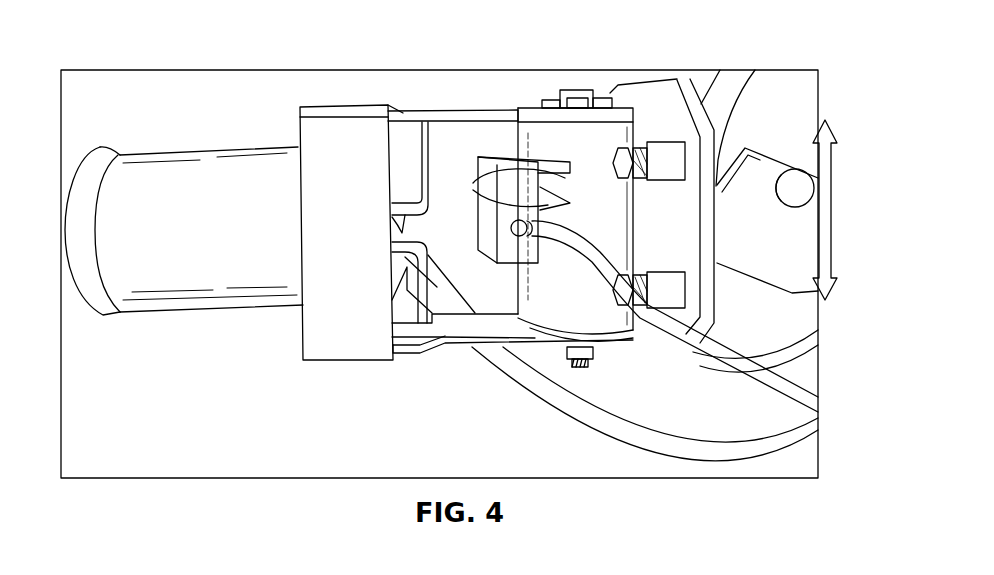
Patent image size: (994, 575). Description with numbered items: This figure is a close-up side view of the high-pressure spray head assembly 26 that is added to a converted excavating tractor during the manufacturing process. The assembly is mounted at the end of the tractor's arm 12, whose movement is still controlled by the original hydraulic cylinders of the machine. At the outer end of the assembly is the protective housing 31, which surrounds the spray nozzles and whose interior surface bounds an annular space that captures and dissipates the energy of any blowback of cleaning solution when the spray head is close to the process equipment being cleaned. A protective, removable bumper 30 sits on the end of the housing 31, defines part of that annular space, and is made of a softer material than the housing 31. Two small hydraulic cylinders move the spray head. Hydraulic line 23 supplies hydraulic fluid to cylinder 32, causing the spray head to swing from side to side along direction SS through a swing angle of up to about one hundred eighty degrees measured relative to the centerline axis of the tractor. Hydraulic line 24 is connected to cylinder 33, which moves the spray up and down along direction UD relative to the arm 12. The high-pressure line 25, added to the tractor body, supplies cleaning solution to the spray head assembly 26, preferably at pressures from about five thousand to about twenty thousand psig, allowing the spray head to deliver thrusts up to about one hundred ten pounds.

The arm 12 is at (784, 90).
The hydraulic line 23 is at (720, 388).
The hydraulic line 24 is at (760, 358).
The high-pressure line 25 is at (613, 433).
The high-pressure spray head assembly 26 is at (247, 108).
The bumper 30 is at (88, 198).
The protective housing 31 is at (170, 240).
The cylinder 32 is at (593, 152).
The cylinder 33 is at (750, 167).